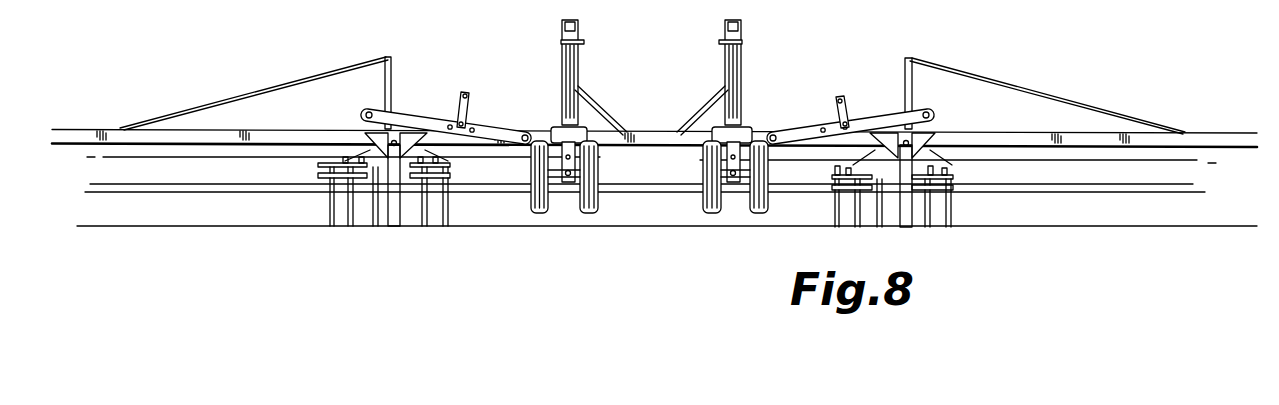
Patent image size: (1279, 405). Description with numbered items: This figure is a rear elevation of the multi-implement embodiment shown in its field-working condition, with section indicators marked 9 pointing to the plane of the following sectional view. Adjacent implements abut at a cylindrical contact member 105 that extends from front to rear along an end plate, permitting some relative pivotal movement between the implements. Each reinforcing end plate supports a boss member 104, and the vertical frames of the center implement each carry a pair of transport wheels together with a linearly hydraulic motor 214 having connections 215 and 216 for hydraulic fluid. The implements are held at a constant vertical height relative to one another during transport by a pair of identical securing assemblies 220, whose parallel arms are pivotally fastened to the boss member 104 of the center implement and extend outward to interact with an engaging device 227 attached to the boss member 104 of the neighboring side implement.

The boss member 104 is at (651, 147).
The cylindrical contact member 105 is at (360, 132).
The linearly hydraulic motor 214 is at (562, 68).
The connection for hydraulic fluid 215 is at (584, 42).
The connection for hydraulic fluid 216 is at (584, 118).
The securing assembly 220 is at (474, 79).
The engaging device 227 is at (358, 67).
The section line for FIG. 9 is at (648, 97).